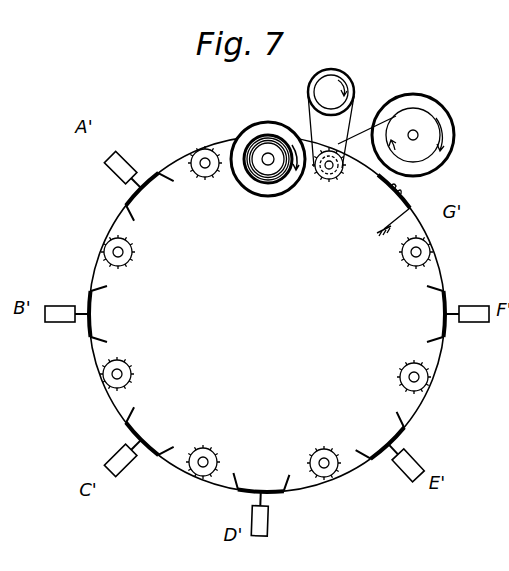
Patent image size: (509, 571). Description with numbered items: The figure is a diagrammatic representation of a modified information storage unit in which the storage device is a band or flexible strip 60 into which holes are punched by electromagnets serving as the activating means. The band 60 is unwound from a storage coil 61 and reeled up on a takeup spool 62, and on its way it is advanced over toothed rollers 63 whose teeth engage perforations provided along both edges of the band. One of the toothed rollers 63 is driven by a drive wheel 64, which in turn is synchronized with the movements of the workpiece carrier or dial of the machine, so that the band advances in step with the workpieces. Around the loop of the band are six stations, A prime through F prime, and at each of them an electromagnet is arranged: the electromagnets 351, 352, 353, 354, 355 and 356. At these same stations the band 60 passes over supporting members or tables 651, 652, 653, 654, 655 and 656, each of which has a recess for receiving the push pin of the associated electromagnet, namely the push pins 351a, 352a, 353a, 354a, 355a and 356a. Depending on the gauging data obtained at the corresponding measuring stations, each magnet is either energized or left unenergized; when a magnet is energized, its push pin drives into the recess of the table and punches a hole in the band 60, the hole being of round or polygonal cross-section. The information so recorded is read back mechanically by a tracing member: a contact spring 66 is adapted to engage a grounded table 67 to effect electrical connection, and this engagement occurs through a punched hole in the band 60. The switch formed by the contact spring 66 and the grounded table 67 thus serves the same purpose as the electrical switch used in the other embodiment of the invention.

The band 60 is at (183, 153).
The storage coil 61 is at (272, 123).
The takeup spool 62 is at (442, 118).
The toothed rollers 63 is at (318, 178).
The drive wheel 64 is at (318, 85).
The contact spring 66 is at (402, 192).
The grounded table 67 is at (400, 193).
The electromagnet 351 is at (116, 140).
The push pin 351a is at (133, 181).
The supporting member or table 651 is at (147, 196).
The electromagnet 352 is at (60, 305).
The push pin 352a is at (80, 318).
The supporting member or table 652 is at (96, 312).
The electromagnet 353 is at (115, 457).
The push pin 353a is at (136, 450).
The supporting member or table 653 is at (146, 438).
The electromagnet 354 is at (268, 526).
The push pin 354a is at (258, 505).
The supporting member or table 654 is at (261, 489).
The electromagnet 355 is at (410, 468).
The push pin 355a is at (402, 446).
The supporting member or table 655 is at (387, 440).
The electromagnet 356 is at (475, 325).
The push pin 356a is at (455, 312).
The supporting member or table 656 is at (440, 317).